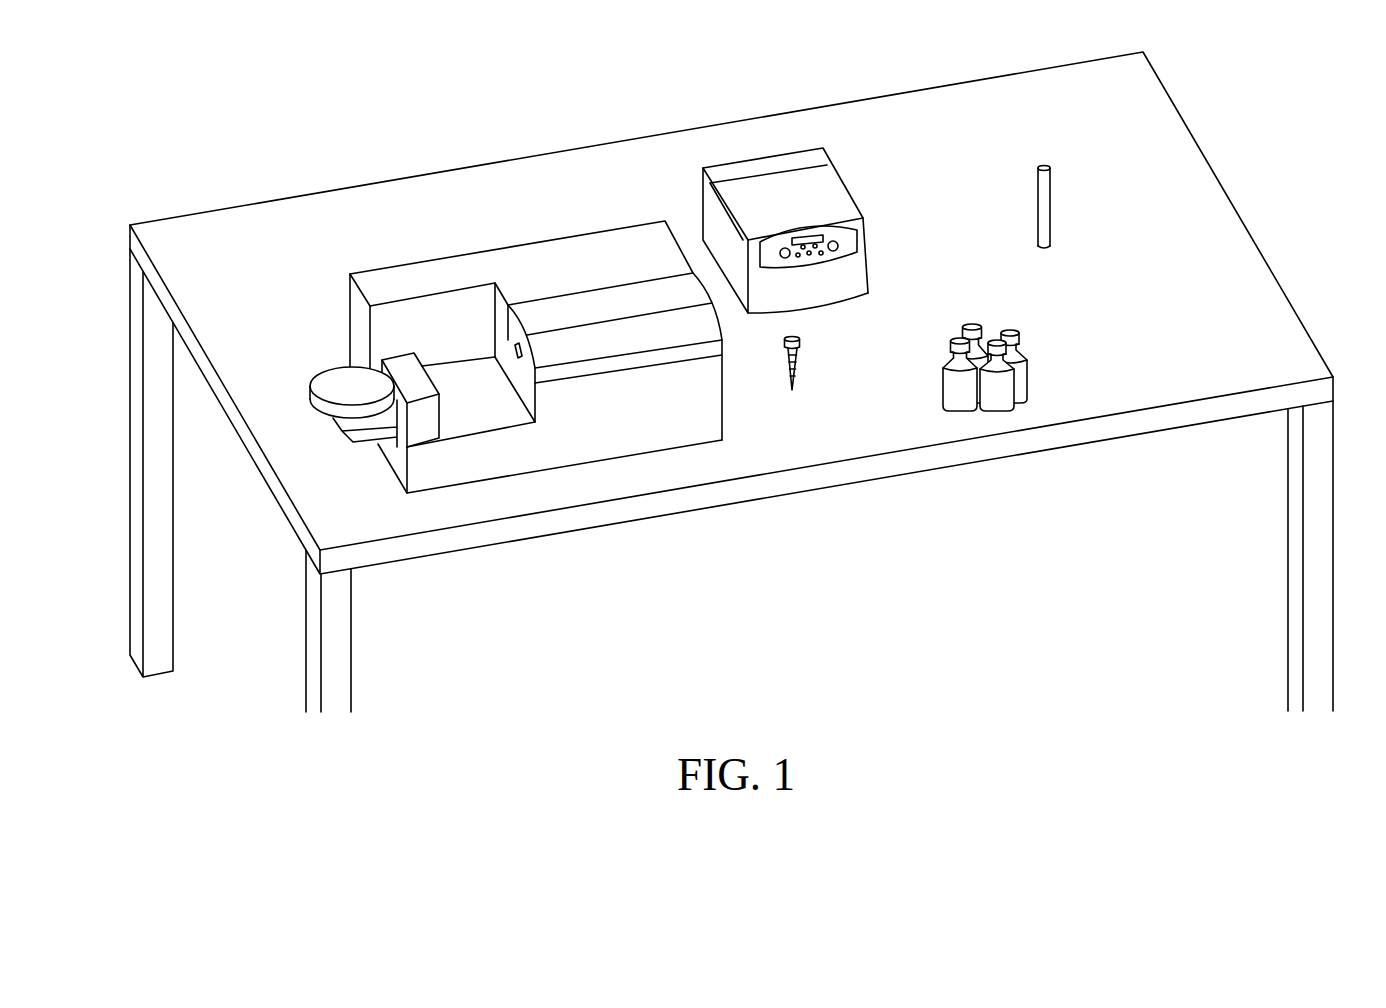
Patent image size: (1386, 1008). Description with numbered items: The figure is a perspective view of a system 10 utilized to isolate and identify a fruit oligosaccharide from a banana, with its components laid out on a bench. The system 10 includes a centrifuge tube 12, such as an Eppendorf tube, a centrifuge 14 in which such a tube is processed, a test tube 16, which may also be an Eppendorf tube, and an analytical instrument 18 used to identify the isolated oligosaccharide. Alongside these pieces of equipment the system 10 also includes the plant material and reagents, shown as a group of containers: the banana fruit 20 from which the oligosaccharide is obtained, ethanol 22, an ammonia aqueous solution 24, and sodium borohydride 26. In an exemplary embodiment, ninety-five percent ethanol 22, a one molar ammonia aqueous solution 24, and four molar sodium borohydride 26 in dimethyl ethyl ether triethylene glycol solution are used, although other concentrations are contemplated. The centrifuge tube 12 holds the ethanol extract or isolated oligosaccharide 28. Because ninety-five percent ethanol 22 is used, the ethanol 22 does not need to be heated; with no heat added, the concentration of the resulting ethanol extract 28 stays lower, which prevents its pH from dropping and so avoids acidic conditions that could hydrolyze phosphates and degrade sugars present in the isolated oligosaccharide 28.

The system 10 is at (235, 82).
The centrifuge tube 12 is at (816, 365).
The centrifuge 14 is at (850, 186).
The test tube 16 is at (1053, 210).
The analytical instrument 18 is at (448, 267).
The banana fruit 20 is at (951, 342).
The ethanol 22 is at (980, 322).
The ammonia aqueous solution 24 is at (1003, 328).
The sodium borohydride 26 is at (1020, 347).
The isolated oligosaccharide 28 is at (800, 375).